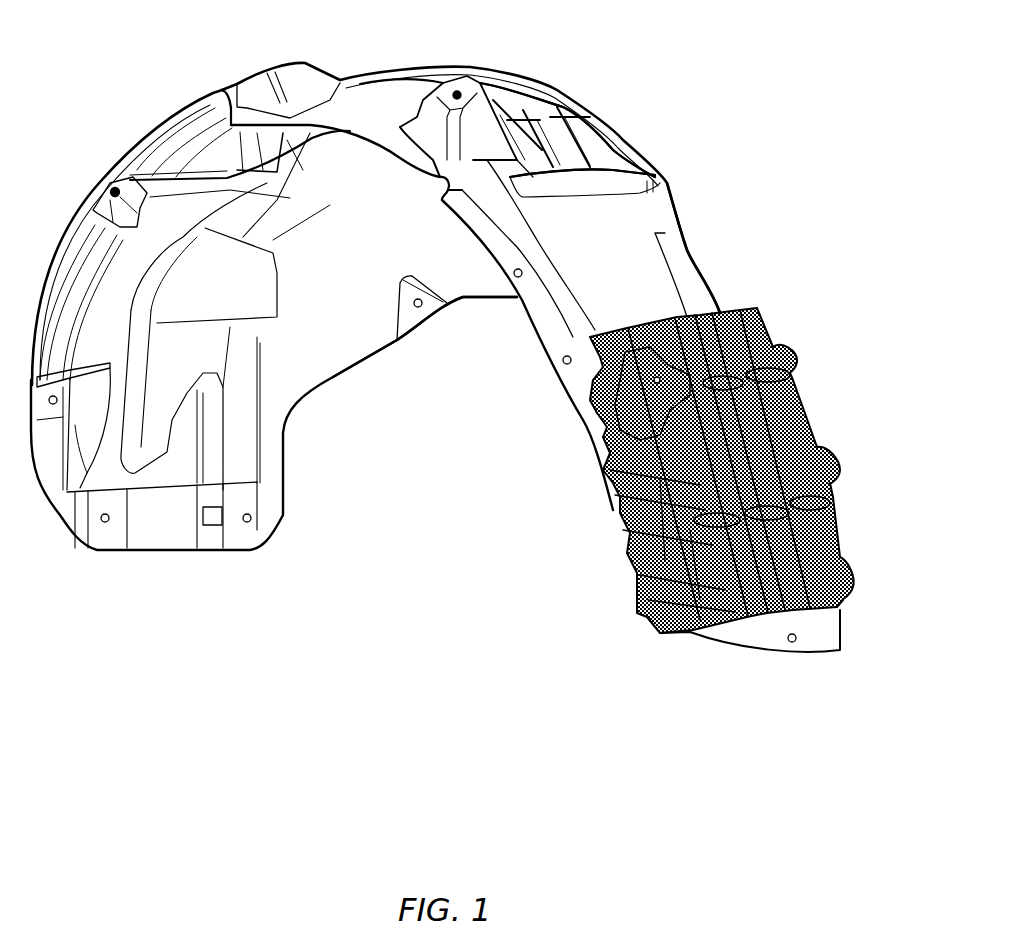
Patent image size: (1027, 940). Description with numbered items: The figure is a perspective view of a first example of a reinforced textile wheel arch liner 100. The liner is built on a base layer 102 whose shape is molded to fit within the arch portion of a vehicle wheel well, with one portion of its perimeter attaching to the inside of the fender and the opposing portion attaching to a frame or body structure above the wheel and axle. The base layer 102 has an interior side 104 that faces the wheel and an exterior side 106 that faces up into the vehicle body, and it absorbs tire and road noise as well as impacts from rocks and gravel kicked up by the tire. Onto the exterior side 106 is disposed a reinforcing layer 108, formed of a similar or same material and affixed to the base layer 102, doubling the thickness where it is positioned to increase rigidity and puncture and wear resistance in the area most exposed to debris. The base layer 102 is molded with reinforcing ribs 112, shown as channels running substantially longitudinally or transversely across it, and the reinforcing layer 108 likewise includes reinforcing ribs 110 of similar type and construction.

The wheel arch liner 100 is at (112, 633).
The base layer 102 is at (267, 507).
The interior side 104 is at (347, 347).
The exterior side 106 is at (642, 273).
The reinforcing layer 108 is at (617, 510).
The reinforcing ribs 110 is at (780, 537).
The reinforcing ribs 112 is at (618, 172).